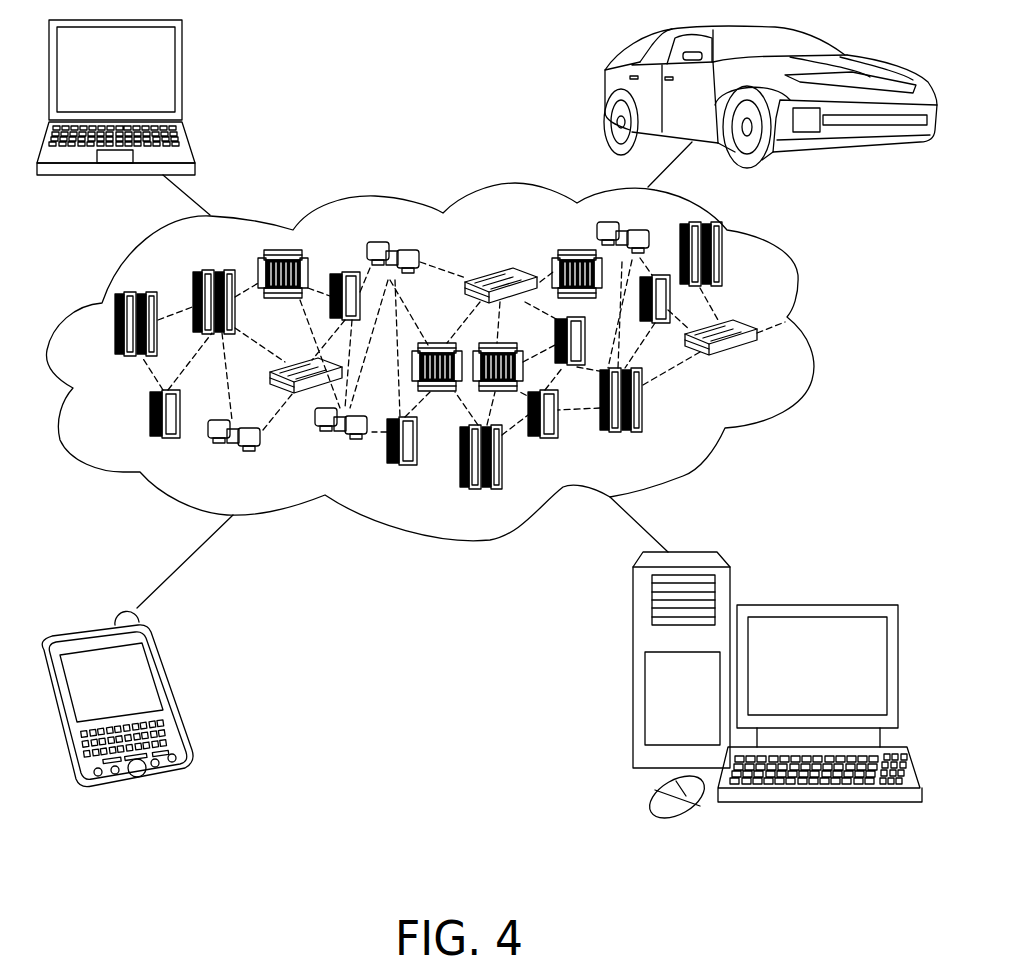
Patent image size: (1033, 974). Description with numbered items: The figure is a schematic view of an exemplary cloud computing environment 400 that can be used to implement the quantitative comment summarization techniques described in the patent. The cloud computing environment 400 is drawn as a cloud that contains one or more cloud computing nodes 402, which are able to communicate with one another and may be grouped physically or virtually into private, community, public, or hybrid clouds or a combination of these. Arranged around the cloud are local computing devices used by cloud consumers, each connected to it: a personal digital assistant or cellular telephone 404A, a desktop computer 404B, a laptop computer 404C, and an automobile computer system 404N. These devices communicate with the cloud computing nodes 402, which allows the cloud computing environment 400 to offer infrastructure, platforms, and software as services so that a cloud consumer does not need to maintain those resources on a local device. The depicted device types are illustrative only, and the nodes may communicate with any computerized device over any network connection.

The cloud computing environment 400 is at (800, 322).
The cloud computing nodes 402 is at (756, 359).
The personal digital assistant (PDA) or cellular telephone 404A is at (160, 664).
The desktop computer 404B is at (805, 607).
The laptop computer 404C is at (183, 57).
The automobile computer system 404N is at (603, 96).